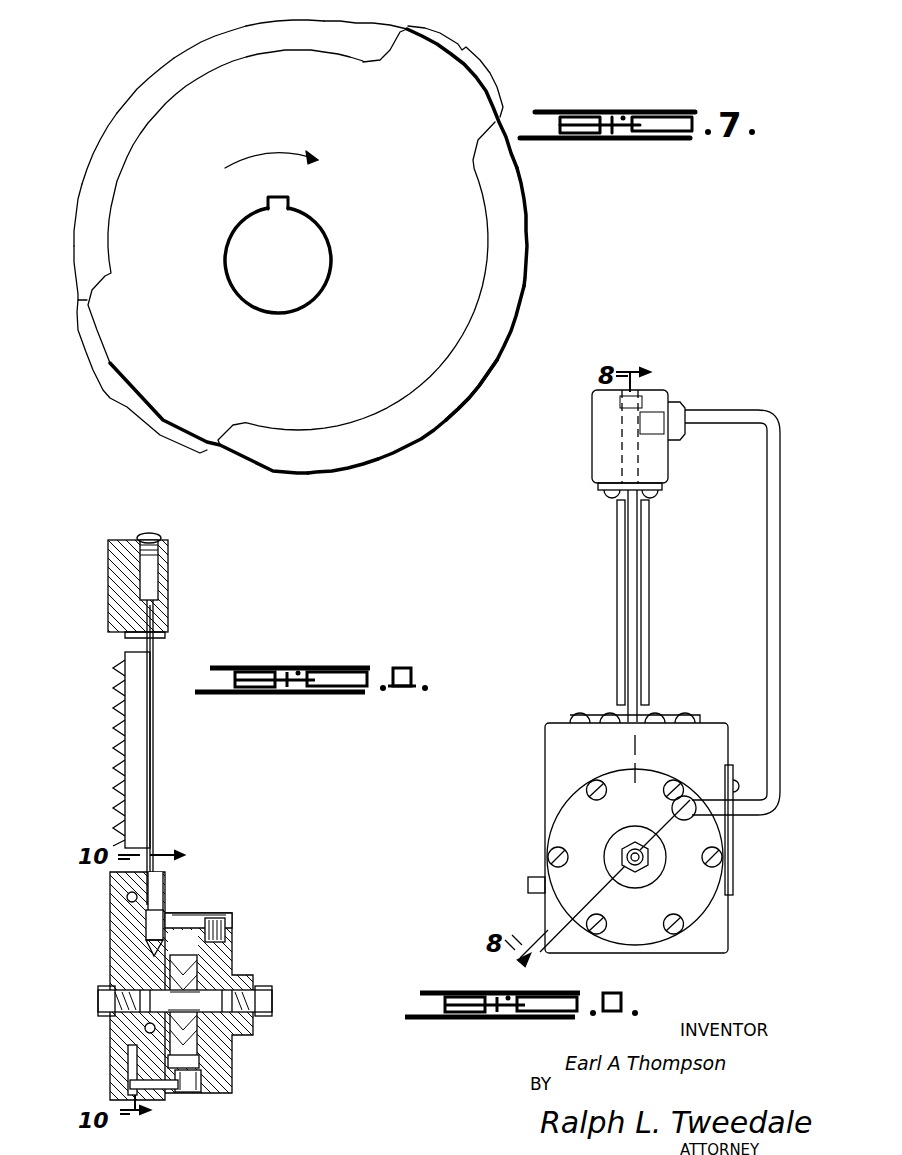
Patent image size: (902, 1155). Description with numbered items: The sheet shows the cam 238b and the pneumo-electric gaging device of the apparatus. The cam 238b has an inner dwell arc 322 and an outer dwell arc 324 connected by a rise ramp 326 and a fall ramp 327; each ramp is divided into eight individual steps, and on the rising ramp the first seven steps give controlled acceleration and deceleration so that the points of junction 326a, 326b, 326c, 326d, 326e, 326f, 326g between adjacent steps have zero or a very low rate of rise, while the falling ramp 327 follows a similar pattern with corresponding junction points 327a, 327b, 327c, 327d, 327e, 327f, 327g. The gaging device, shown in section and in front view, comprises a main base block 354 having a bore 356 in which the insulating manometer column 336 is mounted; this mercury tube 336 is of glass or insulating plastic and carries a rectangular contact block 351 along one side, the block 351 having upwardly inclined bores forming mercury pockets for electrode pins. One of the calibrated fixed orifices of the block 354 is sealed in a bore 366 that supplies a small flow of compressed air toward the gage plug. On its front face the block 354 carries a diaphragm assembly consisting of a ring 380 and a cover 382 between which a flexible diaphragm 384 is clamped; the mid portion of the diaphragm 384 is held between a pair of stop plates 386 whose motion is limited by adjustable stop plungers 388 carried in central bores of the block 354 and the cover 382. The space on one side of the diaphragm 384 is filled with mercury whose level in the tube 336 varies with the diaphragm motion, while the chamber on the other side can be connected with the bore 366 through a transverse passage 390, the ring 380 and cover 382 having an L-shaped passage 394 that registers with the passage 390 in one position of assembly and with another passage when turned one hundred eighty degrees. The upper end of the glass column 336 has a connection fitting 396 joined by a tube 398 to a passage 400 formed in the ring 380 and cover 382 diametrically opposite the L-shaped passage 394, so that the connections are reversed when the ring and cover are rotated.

In FIG. 7, the outer dwell arc 324 is at (466, 52).
In FIG. 7, the inner dwell arc 322 is at (110, 398).
In FIG. 7, the cam 238b is at (278, 286).
In FIG. 7, the rise ramp 326 is at (470, 330).
In FIG. 7, the point of junction 326a is at (308, 475).
In FIG. 7, the point of junction 326b is at (360, 468).
In FIG. 7, the point of junction 326c is at (416, 438).
In FIG. 7, the point of junction 326d is at (476, 388).
In FIG. 7, the point of junction 326e is at (512, 330).
In FIG. 7, the point of junction 326f is at (524, 280).
In FIG. 7, the point of junction 326g is at (528, 232).
In FIG. 7, the fall ramp 327 is at (168, 104).
In FIG. 7, the point of junction 327a is at (334, 22).
In FIG. 7, the point of junction 327b is at (240, 22).
In FIG. 7, the point of junction 327c is at (188, 48).
In FIG. 7, the point of junction 327d is at (140, 86).
In FIG. 7, the point of junction 327e is at (102, 136).
In FIG. 7, the point of junction 327f is at (80, 198).
In FIG. 7, the point of junction 327g is at (76, 264).
In FIG. 8, the connection fitting 396 is at (168, 600).
In FIG. 9, the connection fitting 396 is at (600, 458).
In FIG. 8, the contact block 351 is at (134, 726).
In FIG. 9, the contact block 351 is at (649, 560).
In FIG. 8, the manometer column 336 is at (156, 752).
In FIG. 9, the manometer column 336 is at (624, 606).
In FIG. 8, the main base block 354 is at (112, 928).
In FIG. 9, the main base block 354 is at (550, 752).
In FIG. 8, the bore 356 is at (156, 916).
In FIG. 8, the ring 380 is at (200, 916).
In FIG. 8, the passage 400 is at (224, 926).
In FIG. 8, the stop plates 386 is at (222, 952).
In FIG. 8, the cover 382 is at (236, 970).
In FIG. 9, the cover 382 is at (556, 804).
In FIG. 8, the adjustable stop plungers 388 is at (246, 1016).
In FIG. 8, the flexible diaphragm 384 is at (200, 1062).
In FIG. 8, the bore 366 is at (134, 1086).
In FIG. 8, the L-shaped passage 394 is at (202, 1086).
In FIG. 8, the transverse passage 390 is at (176, 1090).
In FIG. 9, the tube 398 is at (768, 648).